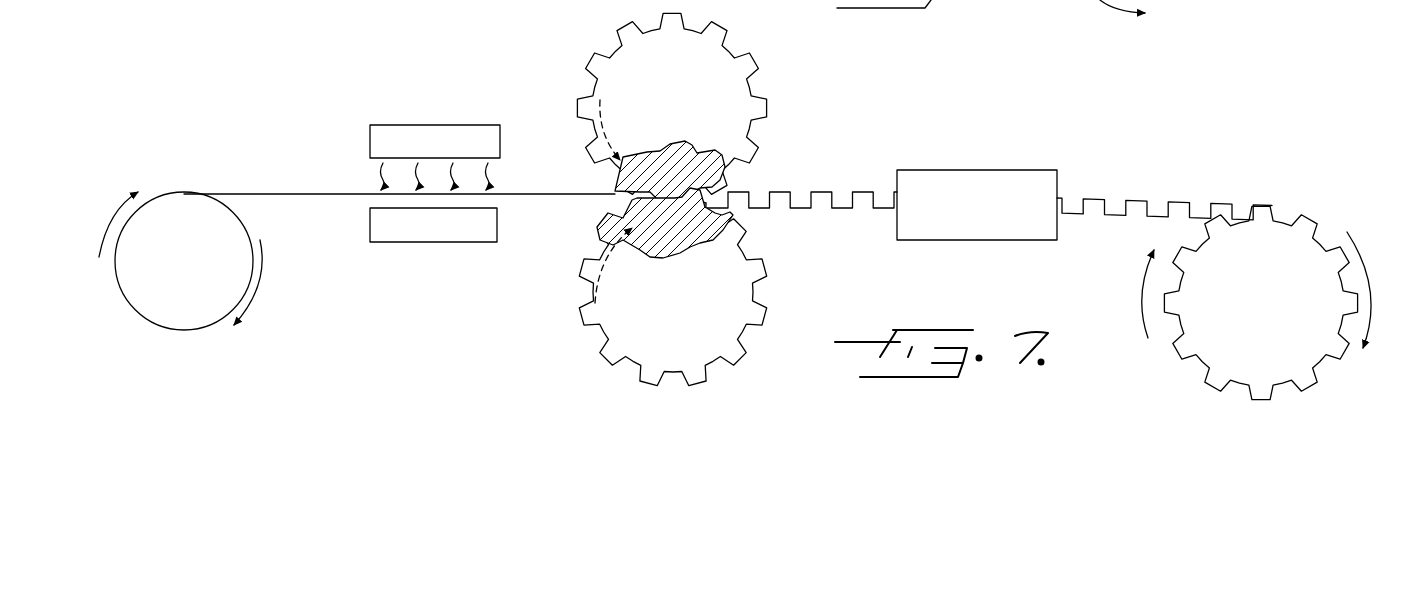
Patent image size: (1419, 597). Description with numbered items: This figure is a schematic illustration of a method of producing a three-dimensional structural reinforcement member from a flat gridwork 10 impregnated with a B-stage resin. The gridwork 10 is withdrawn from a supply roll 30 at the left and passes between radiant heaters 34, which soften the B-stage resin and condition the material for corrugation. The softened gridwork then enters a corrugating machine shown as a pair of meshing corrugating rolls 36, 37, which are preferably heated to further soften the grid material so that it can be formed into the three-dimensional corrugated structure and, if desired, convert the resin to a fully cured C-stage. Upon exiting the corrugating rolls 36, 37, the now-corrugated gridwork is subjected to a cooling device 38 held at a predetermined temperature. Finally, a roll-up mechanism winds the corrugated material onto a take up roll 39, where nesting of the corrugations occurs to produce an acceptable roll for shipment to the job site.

The gridwork 10 is at (293, 194).
The supply roll 30 is at (186, 330).
The radiant heaters 34 is at (422, 242).
The corrugating roll 36 is at (735, 58).
The corrugating roll 37 is at (762, 290).
The cooling device 38 is at (1005, 170).
The take up roll 39 is at (1237, 390).